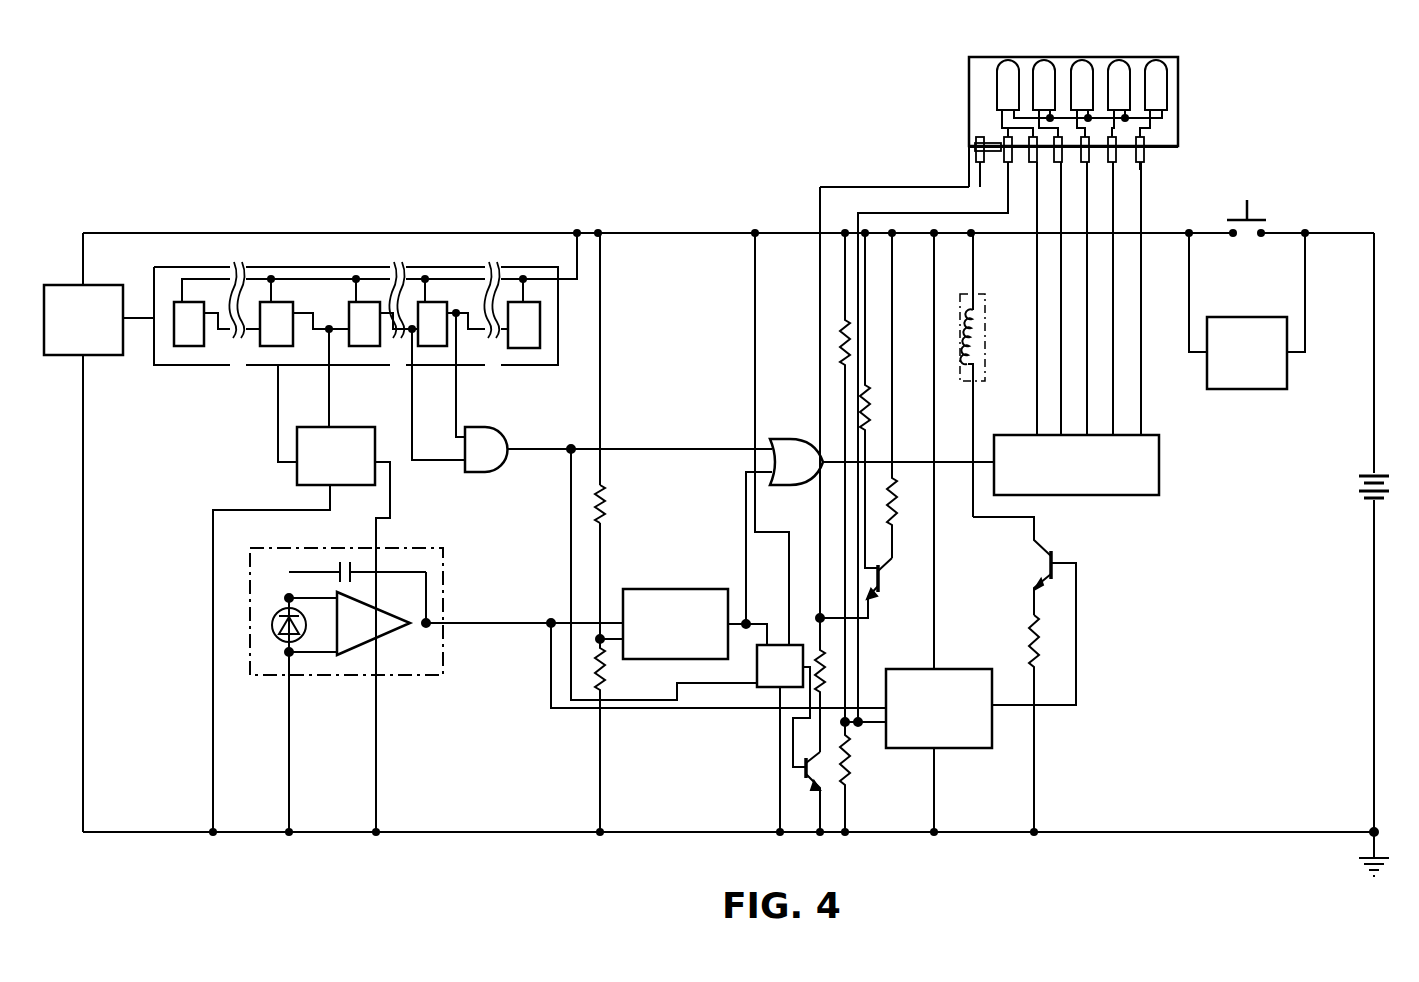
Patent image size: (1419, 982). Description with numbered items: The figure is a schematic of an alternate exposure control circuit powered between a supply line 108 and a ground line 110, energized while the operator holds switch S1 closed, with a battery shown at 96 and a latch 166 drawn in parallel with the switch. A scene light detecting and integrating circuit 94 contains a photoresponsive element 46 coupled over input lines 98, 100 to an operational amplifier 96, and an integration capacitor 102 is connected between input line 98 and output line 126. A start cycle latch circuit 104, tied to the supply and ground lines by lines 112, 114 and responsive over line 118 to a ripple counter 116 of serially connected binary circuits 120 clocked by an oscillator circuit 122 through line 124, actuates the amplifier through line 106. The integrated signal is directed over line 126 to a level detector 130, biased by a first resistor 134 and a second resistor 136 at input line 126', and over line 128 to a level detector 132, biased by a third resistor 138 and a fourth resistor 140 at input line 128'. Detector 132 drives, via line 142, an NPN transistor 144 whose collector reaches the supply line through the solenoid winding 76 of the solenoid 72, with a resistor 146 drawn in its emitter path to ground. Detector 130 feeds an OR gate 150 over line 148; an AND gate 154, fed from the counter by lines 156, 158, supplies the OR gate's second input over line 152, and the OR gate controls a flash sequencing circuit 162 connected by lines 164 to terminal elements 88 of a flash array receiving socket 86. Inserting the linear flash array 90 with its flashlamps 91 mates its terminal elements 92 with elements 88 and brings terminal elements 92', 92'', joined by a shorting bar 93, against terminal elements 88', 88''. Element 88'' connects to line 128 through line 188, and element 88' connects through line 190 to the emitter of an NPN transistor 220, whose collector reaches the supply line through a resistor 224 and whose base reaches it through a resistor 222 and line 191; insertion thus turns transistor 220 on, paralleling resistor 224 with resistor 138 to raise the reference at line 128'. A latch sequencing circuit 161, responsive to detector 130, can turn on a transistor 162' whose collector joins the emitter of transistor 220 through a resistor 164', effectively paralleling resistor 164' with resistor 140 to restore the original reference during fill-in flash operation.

The photoresponsive element 46 is at (275, 640).
The solenoid 72 is at (985, 300).
The solenoid winding 76 is at (968, 318).
The flash array receiving socket 86 is at (1170, 150).
The terminal elements 88 is at (1146, 181).
The terminal element 88' is at (900, 174).
The terminal element 88'' is at (991, 187).
The linear flash array 90 is at (1185, 75).
The flashlamps 91 is at (1150, 68).
The terminal elements 92 is at (1122, 137).
The terminal element 92' is at (965, 125).
The terminal element 92'' is at (964, 111).
The shorting bar 93 is at (975, 147).
The scene light detecting and integrating circuit 94 is at (452, 592).
The operational amplifier 96 is at (392, 652).
The input line 98 is at (289, 598).
The input line 100 is at (320, 660).
The integration capacitor 102 is at (345, 560).
The start cycle latch circuit 104 is at (297, 470).
The interconnecting line 106 is at (390, 495).
The supply line 108 is at (660, 233).
The ground line 110 is at (500, 836).
The line 112 is at (330, 392).
The line 114 is at (213, 640).
The ripple counter 116 is at (420, 262).
The interconnecting line 118 is at (278, 400).
The binary circuits 120 is at (262, 302).
The oscillator circuit 122 is at (70, 356).
The line 124 is at (140, 320).
The output line 126 is at (524, 644).
The input line 126' is at (630, 664).
The interconnecting line 128 is at (906, 461).
The input line 128' is at (880, 743).
The level detector circuit 130 is at (652, 589).
The level detector circuit 132 is at (972, 748).
The first resistor 134 is at (612, 502).
The second resistor 136 is at (595, 665).
The third resistor 138 is at (838, 338).
The fourth resistor 140 is at (858, 775).
The interconnecting line 142 is at (1076, 652).
The NPN transistor 144 is at (1042, 560).
The resistor 146 is at (1028, 640).
The line 148 is at (746, 560).
The OR gate 150 is at (800, 439).
The interconnecting line 152 is at (650, 449).
The AND gate 154 is at (498, 430).
The line 156 is at (457, 392).
The line 158 is at (445, 462).
The latch sequencing circuit 161 is at (765, 690).
The flash sequencing circuit 162 is at (1079, 483).
The transistor 162' is at (779, 792).
The lines 164 is at (1111, 298).
The resistor 164' is at (786, 666).
The latch 166 is at (1250, 389).
The interconnecting line 188 is at (988, 236).
The line 190 is at (571, 512).
The interconnecting line 191 is at (895, 566).
The NPN transistor 220 is at (880, 595).
The resistor 222 is at (900, 500).
The resistor 224 is at (875, 410).
The switch S1 is at (1248, 206).